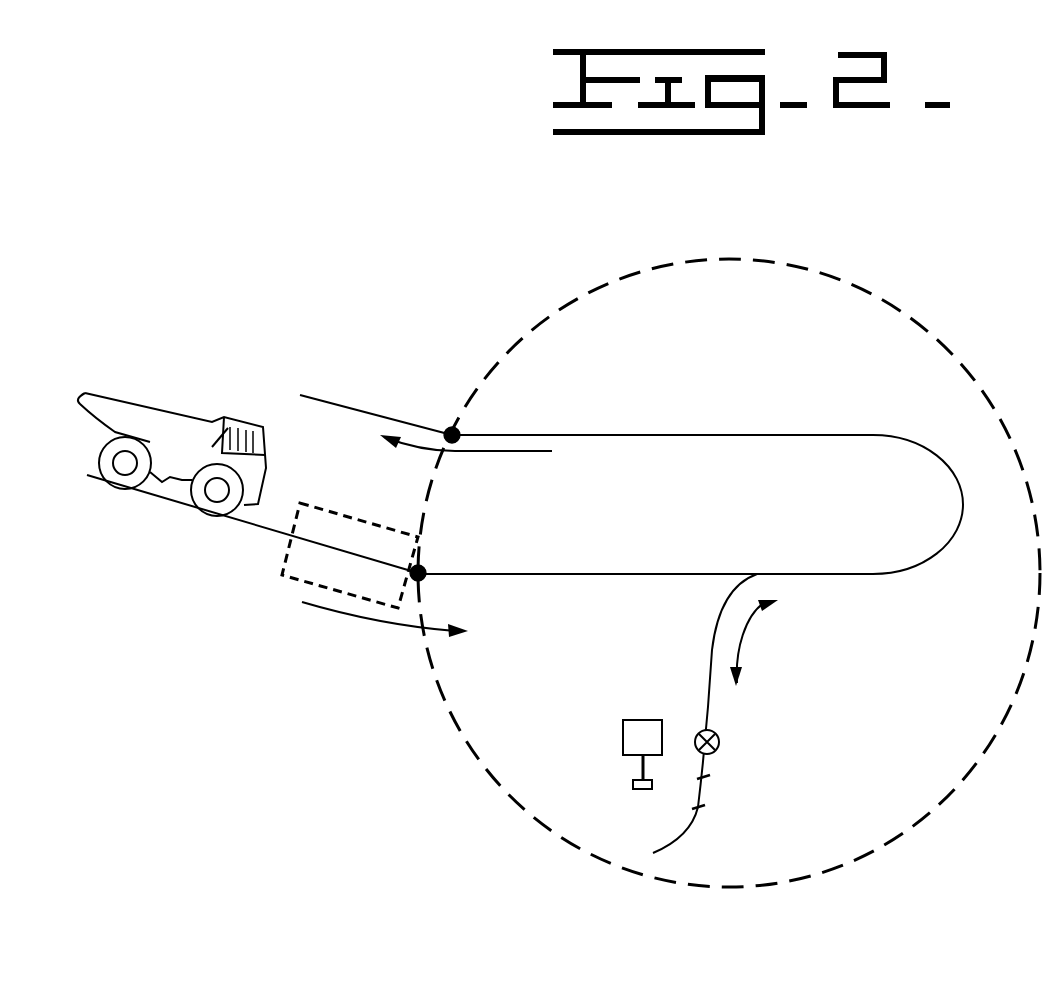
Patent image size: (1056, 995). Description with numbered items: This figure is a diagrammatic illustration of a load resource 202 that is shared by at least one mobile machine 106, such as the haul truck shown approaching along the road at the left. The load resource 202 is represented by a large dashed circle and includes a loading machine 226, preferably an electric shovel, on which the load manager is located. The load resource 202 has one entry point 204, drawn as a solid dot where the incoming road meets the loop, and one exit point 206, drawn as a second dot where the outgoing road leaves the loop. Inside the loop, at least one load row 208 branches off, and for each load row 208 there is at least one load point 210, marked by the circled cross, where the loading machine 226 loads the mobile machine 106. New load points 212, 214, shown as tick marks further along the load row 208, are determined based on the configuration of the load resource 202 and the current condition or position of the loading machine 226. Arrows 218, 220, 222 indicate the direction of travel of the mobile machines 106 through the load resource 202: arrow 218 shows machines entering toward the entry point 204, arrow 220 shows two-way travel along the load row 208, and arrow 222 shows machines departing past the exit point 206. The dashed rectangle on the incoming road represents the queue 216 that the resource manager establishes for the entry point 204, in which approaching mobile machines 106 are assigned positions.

The mobile machine 106 is at (140, 400).
The load resource 202 is at (870, 292).
The entry point 204 is at (425, 569).
The exit point 206 is at (460, 431).
The load row 208 is at (712, 636).
The load point 210 is at (720, 738).
The new load point 212 is at (708, 777).
The new load point 214 is at (700, 810).
The queue 216 is at (283, 560).
The arrow 218 is at (378, 622).
The arrow 220 is at (747, 618).
The arrow 222 is at (490, 452).
The loading machine 226 is at (623, 738).